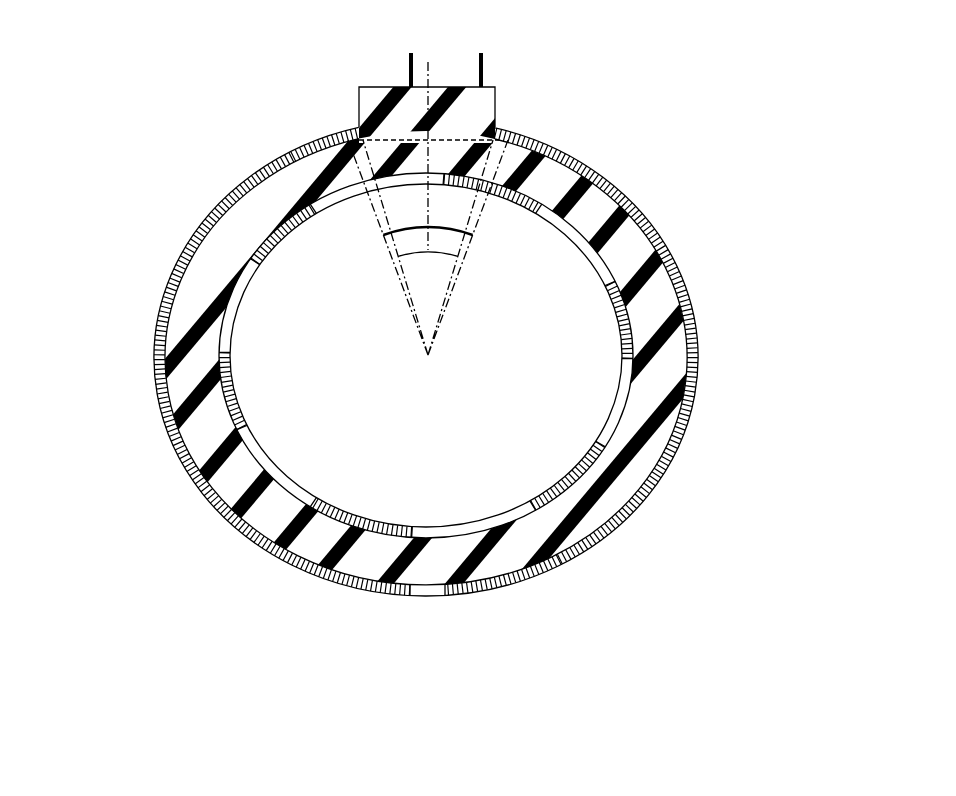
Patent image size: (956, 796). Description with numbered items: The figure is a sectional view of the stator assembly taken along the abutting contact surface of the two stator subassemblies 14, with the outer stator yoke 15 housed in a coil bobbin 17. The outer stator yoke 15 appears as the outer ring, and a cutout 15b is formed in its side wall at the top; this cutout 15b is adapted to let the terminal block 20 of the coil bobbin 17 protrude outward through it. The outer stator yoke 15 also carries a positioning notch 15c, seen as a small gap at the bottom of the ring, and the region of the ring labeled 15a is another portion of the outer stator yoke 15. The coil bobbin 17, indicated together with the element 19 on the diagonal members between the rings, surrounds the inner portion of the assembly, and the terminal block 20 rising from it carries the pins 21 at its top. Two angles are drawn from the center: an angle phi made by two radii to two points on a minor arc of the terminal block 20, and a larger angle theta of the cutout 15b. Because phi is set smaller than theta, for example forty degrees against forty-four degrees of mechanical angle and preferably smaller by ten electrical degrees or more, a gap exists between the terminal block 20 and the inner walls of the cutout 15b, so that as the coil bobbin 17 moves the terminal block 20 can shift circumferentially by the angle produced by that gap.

The stator subassembly 14 is at (726, 358).
The outer stator yoke 15 is at (186, 457).
The outer tube portion 15a is at (600, 540).
The cutout 15b is at (353, 132).
The positioning notch 15c is at (430, 589).
The coil bobbin 17 is at (196, 343).
The helical member 19 is at (435, 398).
The terminal block 20 is at (430, 100).
The pins 21 is at (409, 58).